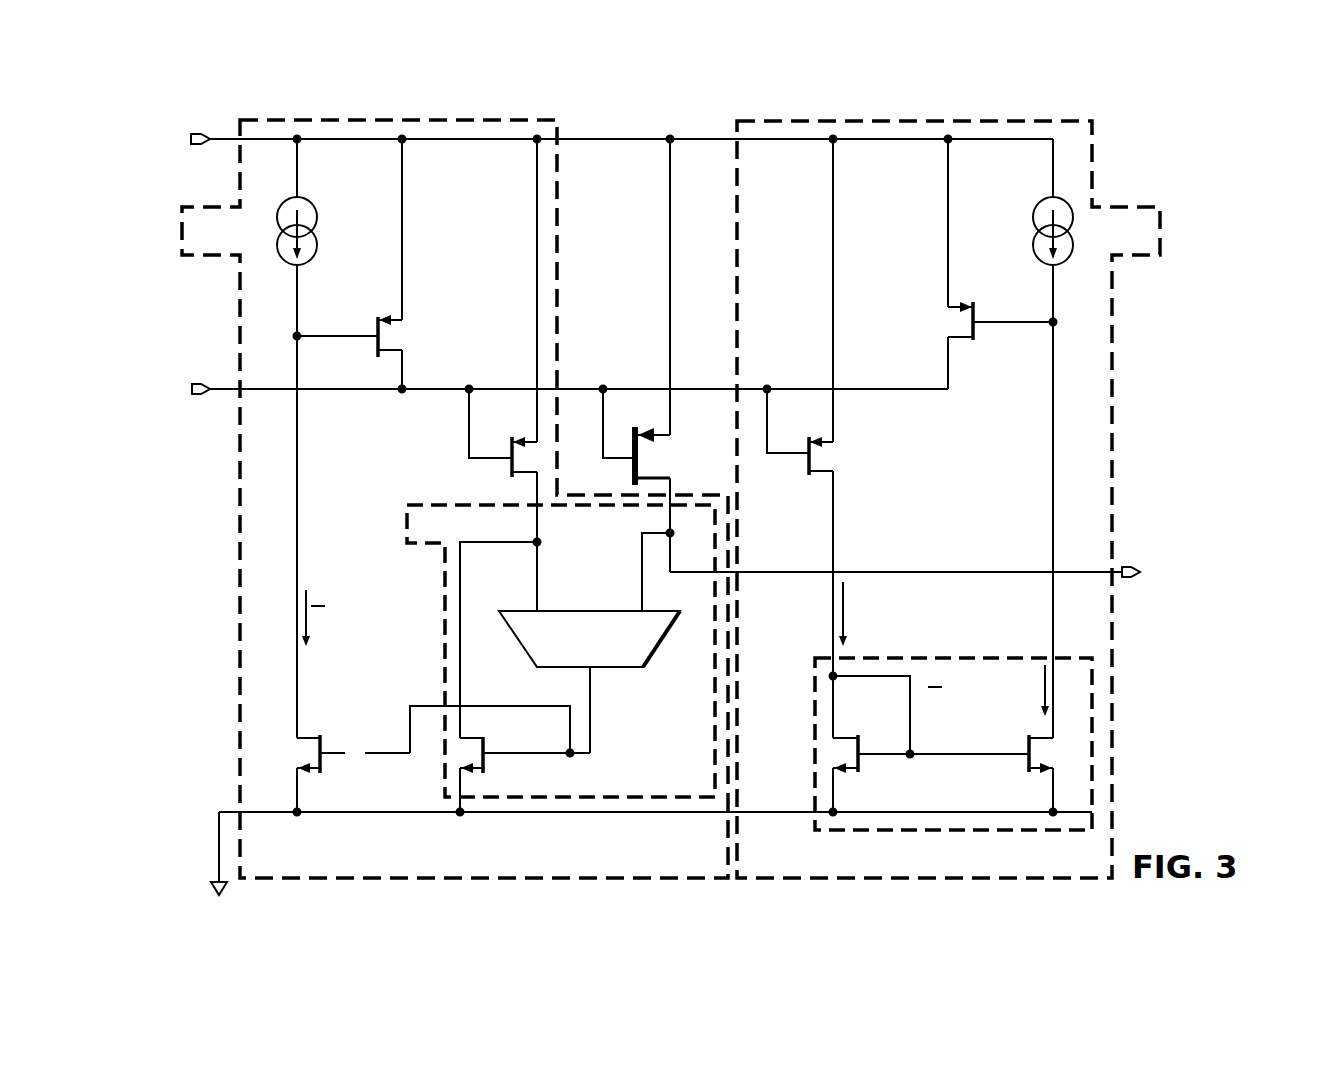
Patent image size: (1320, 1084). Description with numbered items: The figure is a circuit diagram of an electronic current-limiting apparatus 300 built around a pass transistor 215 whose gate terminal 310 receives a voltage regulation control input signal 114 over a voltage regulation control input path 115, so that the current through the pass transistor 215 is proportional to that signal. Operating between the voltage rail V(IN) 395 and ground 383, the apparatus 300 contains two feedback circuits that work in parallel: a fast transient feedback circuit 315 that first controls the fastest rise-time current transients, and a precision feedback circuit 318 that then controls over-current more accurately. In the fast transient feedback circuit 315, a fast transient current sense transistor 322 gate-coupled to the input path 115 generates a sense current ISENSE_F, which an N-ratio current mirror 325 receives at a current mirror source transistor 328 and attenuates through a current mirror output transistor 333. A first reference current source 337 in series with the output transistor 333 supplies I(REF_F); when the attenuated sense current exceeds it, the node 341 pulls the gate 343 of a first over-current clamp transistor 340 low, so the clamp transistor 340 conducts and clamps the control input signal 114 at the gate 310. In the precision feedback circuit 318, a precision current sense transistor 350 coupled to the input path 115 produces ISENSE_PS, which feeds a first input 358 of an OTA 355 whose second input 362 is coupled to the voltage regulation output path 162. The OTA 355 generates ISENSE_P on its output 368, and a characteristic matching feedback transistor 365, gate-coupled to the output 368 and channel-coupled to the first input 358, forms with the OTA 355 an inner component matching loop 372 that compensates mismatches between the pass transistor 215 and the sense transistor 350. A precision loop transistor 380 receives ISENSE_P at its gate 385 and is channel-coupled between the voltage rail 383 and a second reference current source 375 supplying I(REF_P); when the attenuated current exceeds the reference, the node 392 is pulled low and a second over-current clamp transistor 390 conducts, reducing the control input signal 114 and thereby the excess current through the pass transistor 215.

The electronic current-limiting apparatus 300 is at (689, 507).
The voltage regulation control input signal 114 is at (140, 352).
The voltage regulation control input path 115 is at (360, 393).
The voltage regulation output path 162 is at (948, 568).
The pass transistor 215 is at (632, 462).
The gate terminal 310 is at (606, 396).
The fast transient feedback circuit 315 is at (1118, 497).
The precision feedback circuit 318 is at (236, 497).
The fast transient current sense transistor 322 is at (806, 462).
The N-ratio current mirror 325 is at (1018, 652).
The current mirror source transistor 328 is at (858, 745).
The current mirror output transistor 333 is at (1027, 762).
The first reference current source 337 is at (1035, 221).
The first over-current clamp transistor 340 is at (958, 264).
The node 341 is at (1050, 325).
The gate 343 is at (977, 306).
The precision current sense transistor 350 is at (510, 462).
The OTA 355 is at (662, 637).
The first input 358 is at (535, 582).
The second input 362 is at (648, 580).
The characteristic matching feedback transistor 365 is at (486, 745).
The output 368 is at (592, 740).
The inner component matching loop 372 is at (432, 502).
The second reference current source 375 is at (318, 216).
The precision loop transistor 380 is at (435, 699).
The voltage rail 383 is at (402, 817).
The gate 385 is at (324, 745).
The second over-current clamp transistor 390 is at (375, 349).
The node 392 is at (295, 334).
The voltage rail V(IN) 395 is at (607, 143).